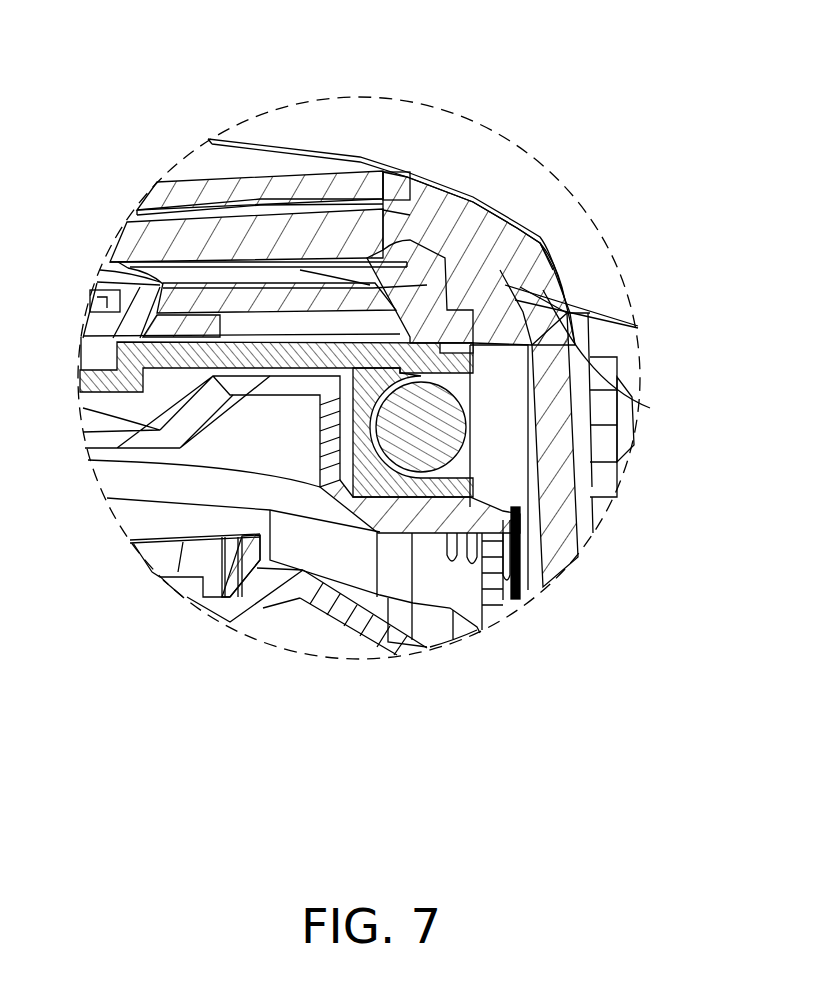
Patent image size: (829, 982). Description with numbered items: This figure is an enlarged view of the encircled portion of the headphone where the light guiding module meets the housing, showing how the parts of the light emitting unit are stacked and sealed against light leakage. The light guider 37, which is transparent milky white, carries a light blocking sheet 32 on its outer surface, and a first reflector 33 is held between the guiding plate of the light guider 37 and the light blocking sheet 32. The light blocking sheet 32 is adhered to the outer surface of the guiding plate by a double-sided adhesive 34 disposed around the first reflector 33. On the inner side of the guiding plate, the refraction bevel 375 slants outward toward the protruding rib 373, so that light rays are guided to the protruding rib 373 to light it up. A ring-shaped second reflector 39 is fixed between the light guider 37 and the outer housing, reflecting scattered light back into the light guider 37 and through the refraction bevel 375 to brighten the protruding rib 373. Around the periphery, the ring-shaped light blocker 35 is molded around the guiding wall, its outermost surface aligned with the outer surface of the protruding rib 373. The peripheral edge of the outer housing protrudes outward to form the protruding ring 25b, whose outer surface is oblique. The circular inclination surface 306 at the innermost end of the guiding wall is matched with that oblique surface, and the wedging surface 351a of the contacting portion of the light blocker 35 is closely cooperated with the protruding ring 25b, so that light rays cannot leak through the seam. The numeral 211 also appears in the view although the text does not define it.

The protruding rib 373 is at (333, 152).
The light blocking sheet 32 is at (210, 168).
The first reflector 33 is at (137, 212).
The double-sided adhesive 34 is at (340, 208).
The light guider 37 is at (113, 250).
The second reflector 39 is at (157, 273).
The refraction bevel 375 is at (457, 203).
The light blocker 35 is at (527, 160).
The inclination surface 306 is at (552, 270).
The wedging surface 351a is at (560, 297).
The protruding ring 25b is at (610, 383).
The block 211 is at (517, 453).